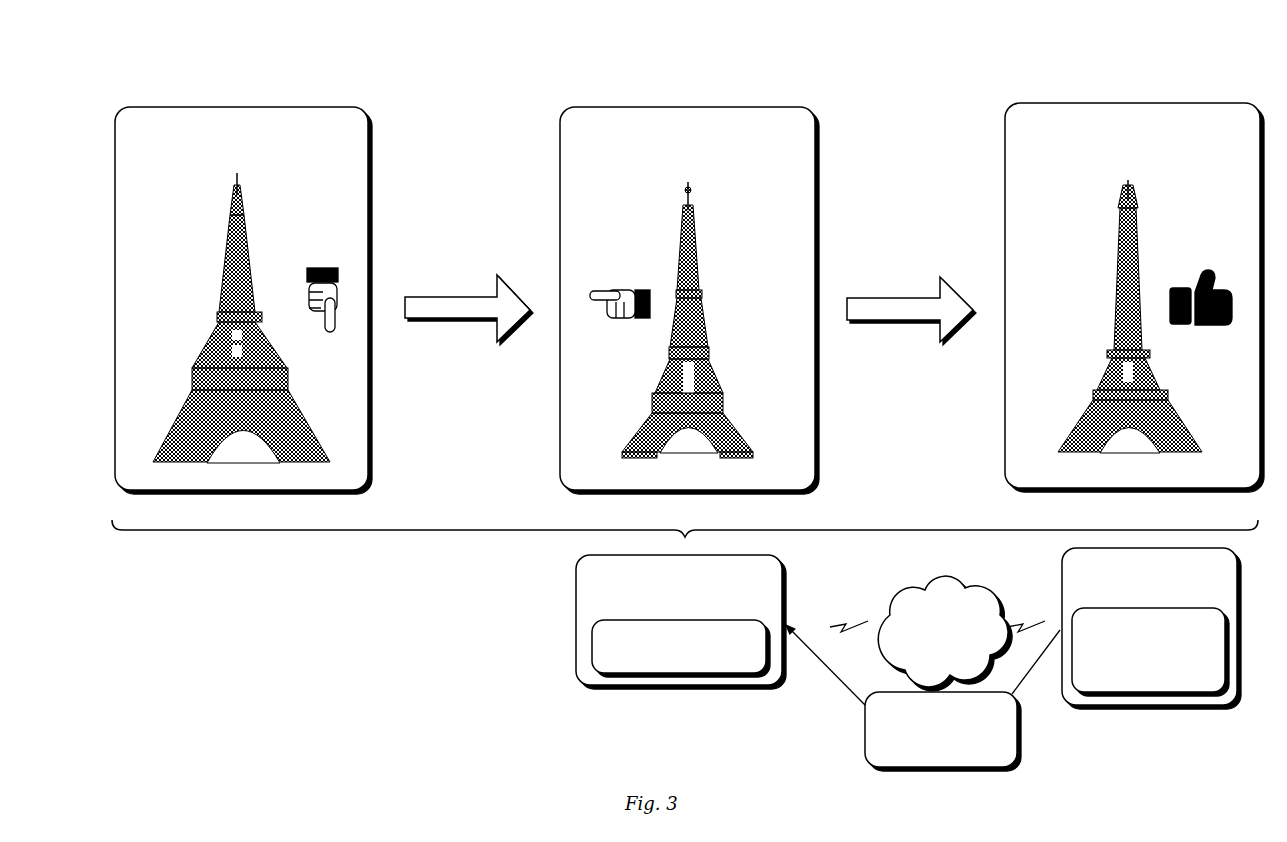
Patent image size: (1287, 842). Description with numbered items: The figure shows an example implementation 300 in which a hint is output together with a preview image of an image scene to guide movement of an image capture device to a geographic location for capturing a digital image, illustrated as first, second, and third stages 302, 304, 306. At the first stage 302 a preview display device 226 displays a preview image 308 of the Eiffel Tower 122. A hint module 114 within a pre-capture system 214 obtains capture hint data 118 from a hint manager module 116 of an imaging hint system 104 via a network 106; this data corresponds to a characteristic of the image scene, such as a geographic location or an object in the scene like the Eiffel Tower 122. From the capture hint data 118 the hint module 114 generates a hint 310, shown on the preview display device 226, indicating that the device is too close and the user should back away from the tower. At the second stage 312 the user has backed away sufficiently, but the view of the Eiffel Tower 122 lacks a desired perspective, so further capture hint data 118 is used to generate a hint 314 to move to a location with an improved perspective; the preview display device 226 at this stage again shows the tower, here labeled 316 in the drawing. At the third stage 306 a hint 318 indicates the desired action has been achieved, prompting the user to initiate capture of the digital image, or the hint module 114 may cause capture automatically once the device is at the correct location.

The example implementation 300 is at (152, 84).
The first stage 302 is at (280, 277).
The second stage 304 is at (725, 277).
The third stage 306 is at (1089, 276).
The preview image 308 is at (370, 210).
The hint 310 is at (326, 262).
The second stage 312 is at (818, 200).
The hint 314 is at (640, 290).
The third preview digital image 316 is at (1003, 258).
The hint 318 is at (1210, 270).
The preview display device 226 is at (689, 277).
The Eiffel Tower 122 is at (230, 308).
The pre-capture system 214 is at (681, 622).
The hint module 114 is at (681, 648).
The network 106 is at (937, 633).
The imaging hint system 104 is at (1151, 628).
The hint manager module 116 is at (1150, 652).
The capture hint data 118 is at (923, 698).